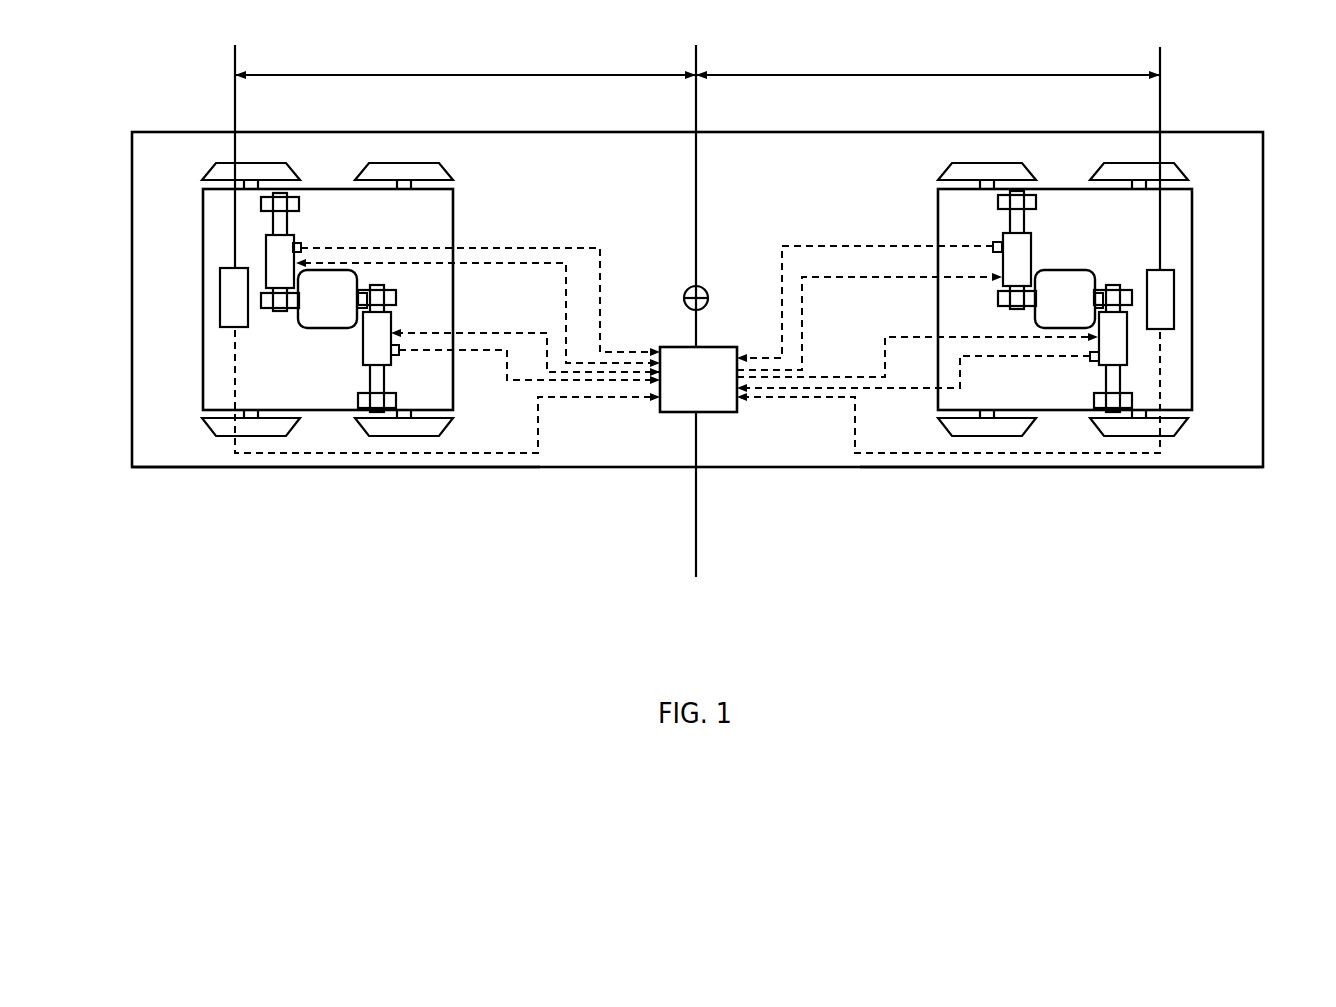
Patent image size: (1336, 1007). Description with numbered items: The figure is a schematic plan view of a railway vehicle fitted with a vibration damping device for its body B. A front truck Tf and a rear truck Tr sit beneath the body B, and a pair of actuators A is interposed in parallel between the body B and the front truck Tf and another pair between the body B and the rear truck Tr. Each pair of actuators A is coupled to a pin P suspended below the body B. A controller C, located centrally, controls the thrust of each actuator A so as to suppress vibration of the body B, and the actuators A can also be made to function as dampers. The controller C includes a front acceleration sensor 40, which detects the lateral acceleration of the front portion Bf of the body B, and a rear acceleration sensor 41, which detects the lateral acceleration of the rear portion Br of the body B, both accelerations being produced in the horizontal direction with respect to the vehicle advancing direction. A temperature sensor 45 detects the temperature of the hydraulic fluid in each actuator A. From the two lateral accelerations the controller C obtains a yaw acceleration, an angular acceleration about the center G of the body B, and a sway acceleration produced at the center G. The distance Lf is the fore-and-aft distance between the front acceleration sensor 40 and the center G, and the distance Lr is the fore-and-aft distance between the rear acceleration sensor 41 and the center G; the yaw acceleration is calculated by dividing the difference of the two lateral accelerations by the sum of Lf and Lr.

The front acceleration sensor 40 is at (228, 296).
The rear acceleration sensor 41 is at (1168, 302).
The temperature sensor 45 is at (301, 248).
The actuator A is at (296, 240).
The pin P is at (318, 325).
The controller C is at (660, 413).
The center of the body G is at (703, 290).
The body B is at (178, 133).
The front portion of the body Bf is at (207, 455).
The rear portion of the body Br is at (1183, 458).
The front truck Tf is at (207, 370).
The rear truck Tr is at (1185, 238).
The distance between front acceleration sensor and center of body Lf is at (465, 183).
The distance between rear acceleration sensor and center of body Lr is at (928, 185).